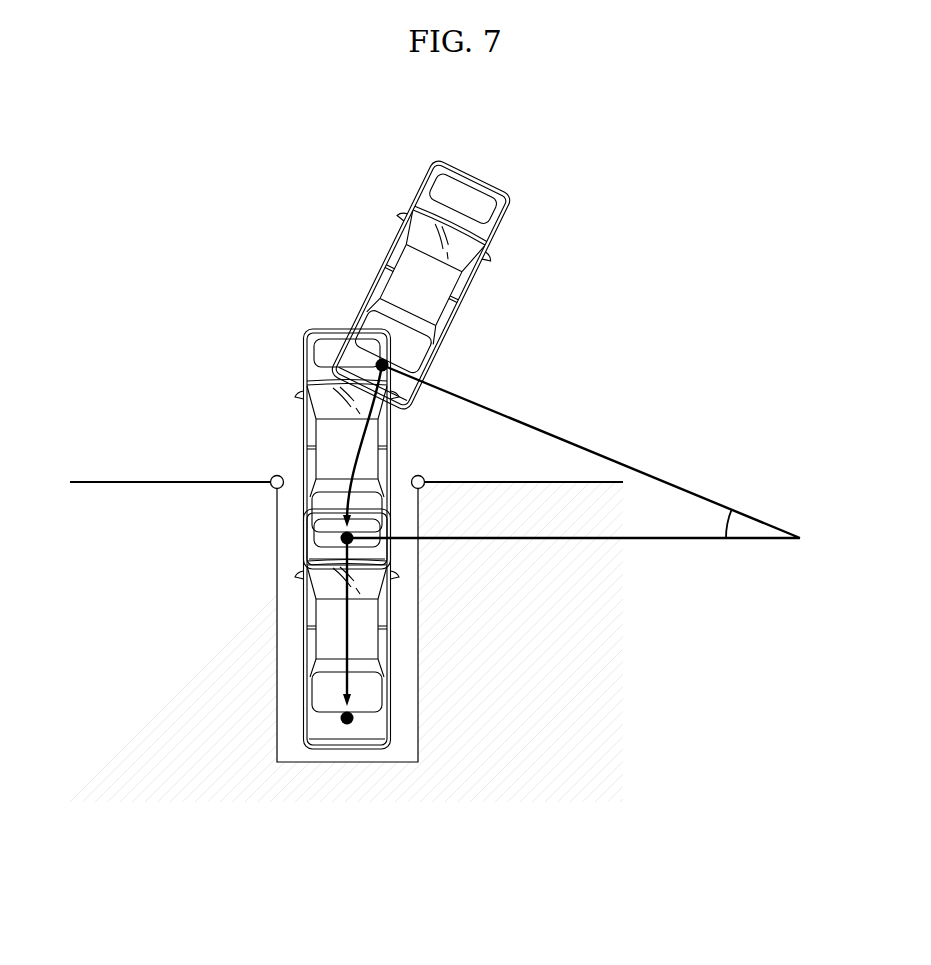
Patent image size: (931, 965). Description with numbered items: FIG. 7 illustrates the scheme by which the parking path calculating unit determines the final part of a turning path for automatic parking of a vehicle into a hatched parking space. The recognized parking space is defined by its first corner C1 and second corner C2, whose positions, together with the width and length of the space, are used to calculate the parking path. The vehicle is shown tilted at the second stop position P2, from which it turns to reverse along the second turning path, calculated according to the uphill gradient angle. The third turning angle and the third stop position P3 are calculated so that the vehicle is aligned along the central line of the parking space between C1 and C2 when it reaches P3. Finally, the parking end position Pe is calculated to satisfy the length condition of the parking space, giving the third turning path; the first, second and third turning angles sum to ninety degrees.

The second stop position P2 is at (377, 364).
The third stop position P3 is at (302, 503).
The parking end position Pe is at (342, 727).
The first corner C1 is at (261, 497).
The second corner C2 is at (433, 497).